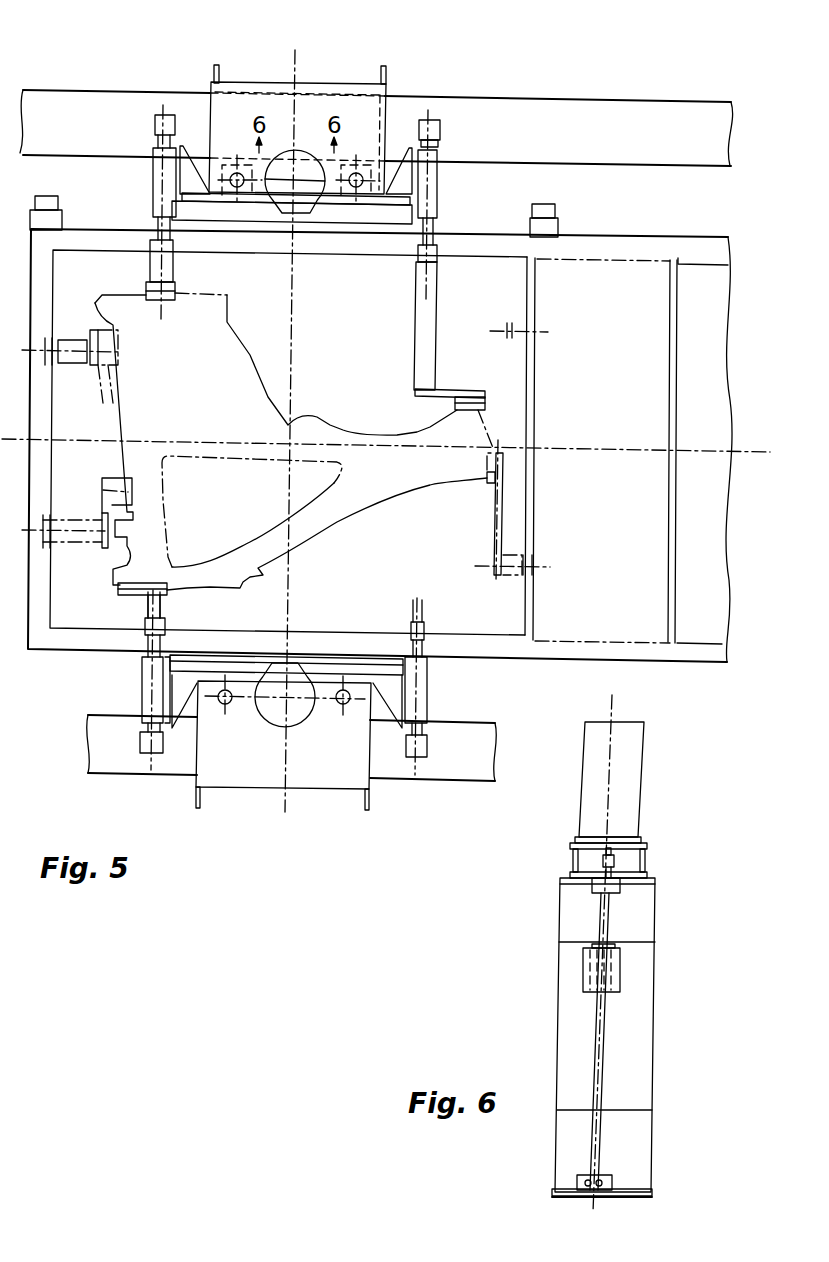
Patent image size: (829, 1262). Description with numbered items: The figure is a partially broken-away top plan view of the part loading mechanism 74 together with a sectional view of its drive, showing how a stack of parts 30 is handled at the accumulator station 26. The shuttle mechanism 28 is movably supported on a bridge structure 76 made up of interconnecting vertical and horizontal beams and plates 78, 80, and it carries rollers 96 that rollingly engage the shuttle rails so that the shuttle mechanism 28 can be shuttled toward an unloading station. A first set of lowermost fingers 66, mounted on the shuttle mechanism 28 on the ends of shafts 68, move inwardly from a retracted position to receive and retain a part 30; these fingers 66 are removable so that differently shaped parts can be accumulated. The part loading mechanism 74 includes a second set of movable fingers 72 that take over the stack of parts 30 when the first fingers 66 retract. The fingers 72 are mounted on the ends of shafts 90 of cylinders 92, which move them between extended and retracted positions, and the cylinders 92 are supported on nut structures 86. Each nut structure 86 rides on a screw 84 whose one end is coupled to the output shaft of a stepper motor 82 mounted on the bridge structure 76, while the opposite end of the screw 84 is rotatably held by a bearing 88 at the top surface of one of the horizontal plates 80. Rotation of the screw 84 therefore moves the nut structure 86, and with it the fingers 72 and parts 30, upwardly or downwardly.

In FIG. 5, the accumulator station 26 is at (386, 292).
In FIG. 5, the shuttle mechanism 28 is at (96, 231).
In FIG. 5, the part 30 is at (347, 425).
In FIG. 5, the first set of lowermost fingers 66 is at (113, 404).
In FIG. 5, the shafts 68 is at (47, 357).
In FIG. 5, the second set of movable fingers 72 is at (176, 292).
In FIG. 5, the part loading mechanism 74 is at (206, 53).
In FIG. 5, the bridge structure 76 is at (697, 100).
In FIG. 6, the vertical beams and plates 78 is at (657, 956).
In FIG. 5, the horizontal beams and plates 80 is at (355, 90).
In FIG. 6, the horizontal beams and plates 80 is at (648, 858).
In FIG. 5, the stepper motors 82 is at (298, 158).
In FIG. 6, the stepper motors 82 is at (646, 772).
In FIG. 6, the screw 84 is at (607, 1053).
In FIG. 6, the nut structure 86 is at (621, 985).
In FIG. 6, the bearing 88 is at (613, 1180).
In FIG. 5, the shafts 90 is at (161, 226).
In FIG. 5, the cylinders 92 is at (142, 690).
In FIG. 5, the rollers 96 is at (56, 200).